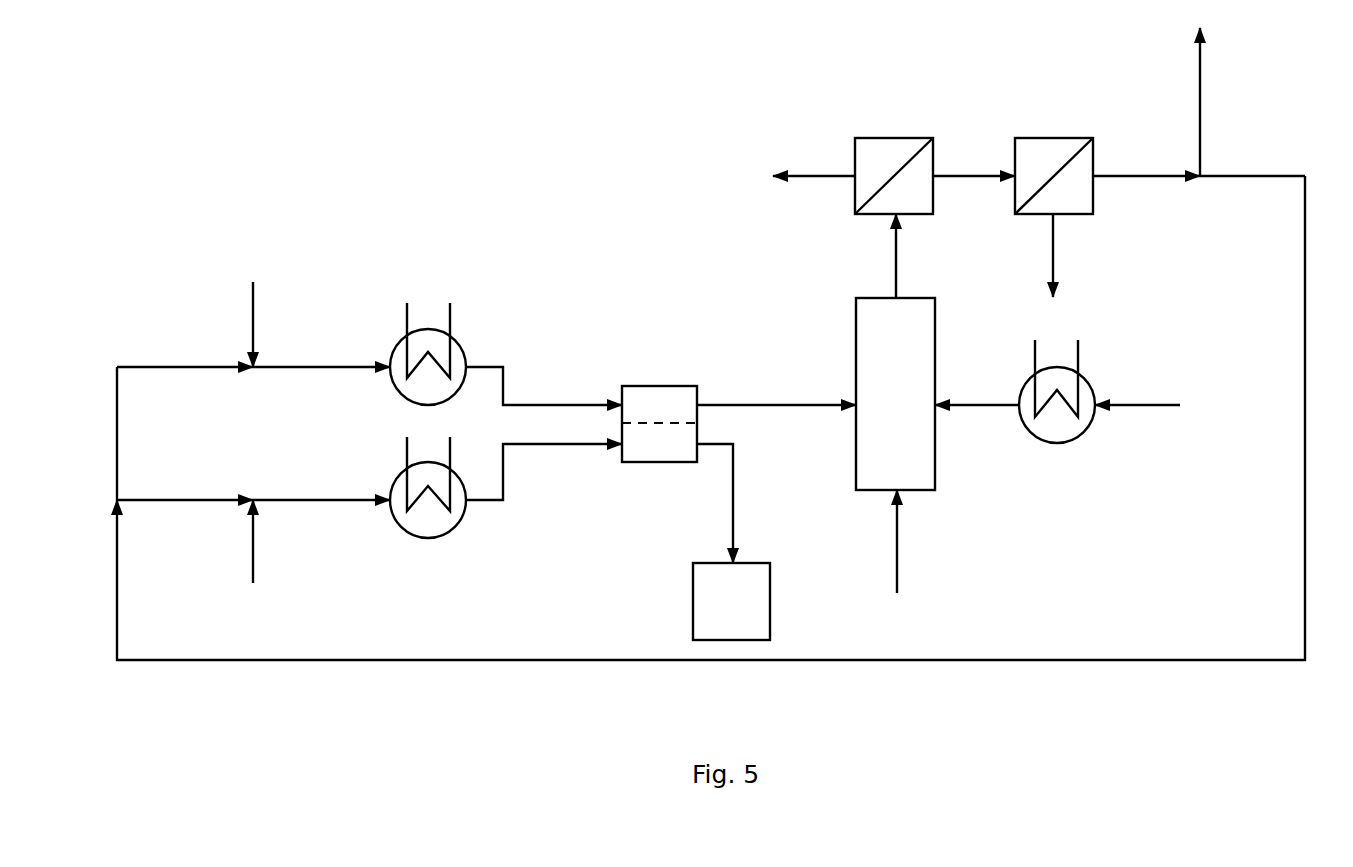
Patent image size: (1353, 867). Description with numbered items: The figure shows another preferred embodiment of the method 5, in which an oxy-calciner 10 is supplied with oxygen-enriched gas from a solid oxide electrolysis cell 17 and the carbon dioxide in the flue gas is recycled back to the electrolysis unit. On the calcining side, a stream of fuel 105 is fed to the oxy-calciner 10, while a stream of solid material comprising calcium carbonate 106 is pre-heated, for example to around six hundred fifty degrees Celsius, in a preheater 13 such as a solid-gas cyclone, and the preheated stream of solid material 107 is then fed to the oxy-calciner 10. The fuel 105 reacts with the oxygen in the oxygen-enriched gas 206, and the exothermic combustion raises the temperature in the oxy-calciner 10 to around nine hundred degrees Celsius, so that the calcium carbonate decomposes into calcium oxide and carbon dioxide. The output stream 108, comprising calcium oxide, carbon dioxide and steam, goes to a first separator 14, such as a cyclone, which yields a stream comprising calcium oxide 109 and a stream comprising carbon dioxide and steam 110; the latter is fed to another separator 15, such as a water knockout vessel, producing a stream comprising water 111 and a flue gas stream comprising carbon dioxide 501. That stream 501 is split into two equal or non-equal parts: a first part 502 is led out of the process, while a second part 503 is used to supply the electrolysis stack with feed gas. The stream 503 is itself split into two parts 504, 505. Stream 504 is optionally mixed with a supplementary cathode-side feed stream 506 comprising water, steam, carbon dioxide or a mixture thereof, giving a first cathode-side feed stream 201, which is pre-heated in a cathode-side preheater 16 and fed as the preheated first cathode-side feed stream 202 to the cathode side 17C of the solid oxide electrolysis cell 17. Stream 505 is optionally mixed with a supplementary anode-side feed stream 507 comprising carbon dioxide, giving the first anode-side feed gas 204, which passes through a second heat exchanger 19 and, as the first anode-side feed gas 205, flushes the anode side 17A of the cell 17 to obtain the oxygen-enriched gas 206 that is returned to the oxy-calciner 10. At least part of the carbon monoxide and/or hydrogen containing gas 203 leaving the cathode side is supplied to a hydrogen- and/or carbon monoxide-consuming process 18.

The method 5 is at (486, 185).
The oxy-calciner 10 is at (857, 298).
The preheater 13 is at (1087, 378).
The first separator 14 is at (855, 138).
The separator 15 is at (1015, 138).
The cathode-side preheater 16 is at (397, 476).
The solid oxide electrolysis cell 17 is at (622, 386).
The anode side 17A is at (673, 402).
The cathode side 17C is at (635, 450).
The hydrogen- and/or carbon monoxide-consuming process 18 is at (693, 570).
The heat exchanger 19 is at (397, 342).
The stream of fuel 105 is at (899, 548).
The stream of solid material comprising calcium carbonate 106 is at (1140, 405).
The preheated stream of solid material 107 is at (977, 405).
The output stream 108 is at (898, 265).
The stream comprising calcium oxide 109 is at (820, 176).
The stream comprising carbon dioxide and steam 110 is at (975, 176).
The stream comprising H2O 111 is at (1055, 258).
The first cathode-side feed stream 201 is at (350, 500).
The preheated first cathode-side feed stream 202 is at (575, 444).
The carbon monoxide and/or hydrogen containing gas 203 is at (735, 510).
The first anode-side feed gas 204 is at (350, 367).
The first anode-side feed gas 205 is at (572, 405).
The oxygen-enriched gas 206 is at (817, 405).
The flue gas stream comprising carbon dioxide 501 is at (1122, 176).
The first part of the stream comprising carbon dioxide 502 is at (1203, 98).
The second part of the stream comprising carbon dioxide 503 is at (463, 660).
The stream 504 is at (207, 500).
The stream 505 is at (207, 367).
The supplementary cathode-side feed stream 506 is at (255, 555).
The supplementary anode-side feed stream 507 is at (253, 318).